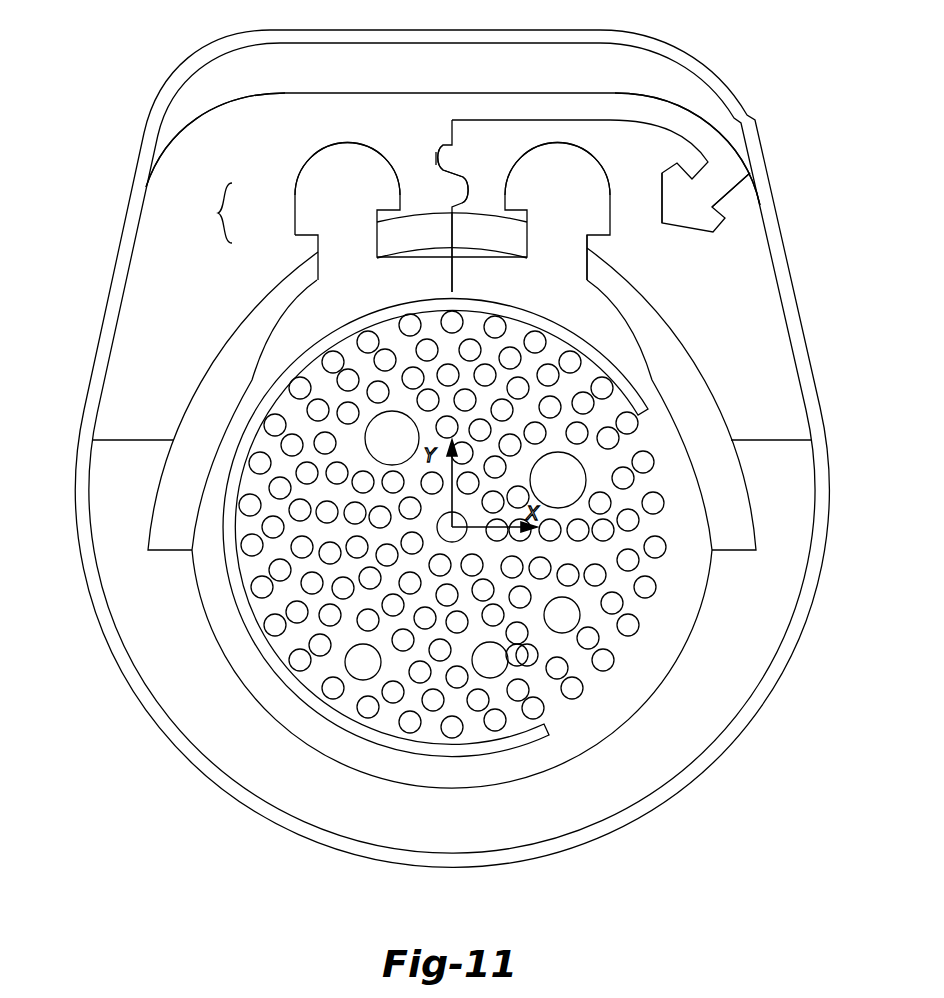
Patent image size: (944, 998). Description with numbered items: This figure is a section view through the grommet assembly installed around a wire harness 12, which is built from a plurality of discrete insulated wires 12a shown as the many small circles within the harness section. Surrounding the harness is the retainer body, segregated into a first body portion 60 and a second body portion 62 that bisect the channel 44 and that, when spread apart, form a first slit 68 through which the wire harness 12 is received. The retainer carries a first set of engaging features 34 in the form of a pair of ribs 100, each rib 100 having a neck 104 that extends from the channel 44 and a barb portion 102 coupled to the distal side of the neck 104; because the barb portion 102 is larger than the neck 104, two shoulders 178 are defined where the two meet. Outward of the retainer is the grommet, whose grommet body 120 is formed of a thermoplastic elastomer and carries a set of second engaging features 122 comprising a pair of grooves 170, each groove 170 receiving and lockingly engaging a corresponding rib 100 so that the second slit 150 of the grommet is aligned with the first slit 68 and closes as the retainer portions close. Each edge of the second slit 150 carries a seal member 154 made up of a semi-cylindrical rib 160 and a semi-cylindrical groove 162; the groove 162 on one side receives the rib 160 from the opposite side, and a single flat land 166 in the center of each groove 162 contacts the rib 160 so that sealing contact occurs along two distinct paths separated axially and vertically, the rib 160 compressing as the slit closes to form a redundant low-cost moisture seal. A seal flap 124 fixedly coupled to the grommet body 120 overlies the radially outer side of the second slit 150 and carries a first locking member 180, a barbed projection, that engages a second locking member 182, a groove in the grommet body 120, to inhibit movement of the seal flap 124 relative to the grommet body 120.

The wire harness 12 is at (505, 524).
The insulated wires 12a is at (580, 542).
The first set of engaging features 34 is at (350, 150).
The channel 44 is at (206, 410).
The first body portion 60 is at (702, 415).
The second body portion 62 is at (162, 542).
The first slit 68 is at (450, 268).
The rib 100 is at (307, 167).
The barb portion 102 is at (537, 153).
The neck 104 is at (560, 248).
The grommet body 120 is at (171, 238).
The set of second engaging features 122 is at (210, 150).
The seal flap 124 is at (660, 108).
The second slit 150 is at (450, 123).
The seal member 154 is at (208, 213).
The rib 160 is at (450, 157).
The groove 162 is at (440, 147).
The flat land 166 is at (437, 158).
The groove 170 is at (340, 150).
The shoulder 178 is at (603, 227).
The first locking member 180 is at (703, 220).
The second locking member 182 is at (649, 193).